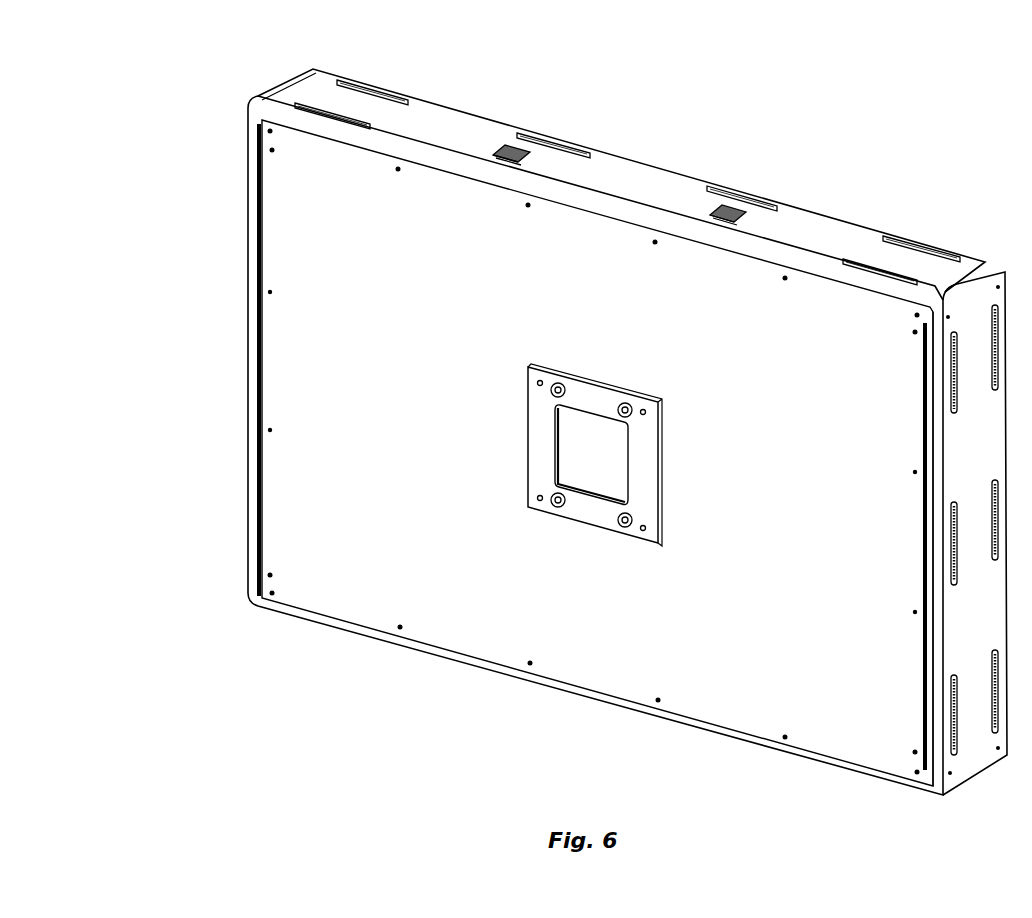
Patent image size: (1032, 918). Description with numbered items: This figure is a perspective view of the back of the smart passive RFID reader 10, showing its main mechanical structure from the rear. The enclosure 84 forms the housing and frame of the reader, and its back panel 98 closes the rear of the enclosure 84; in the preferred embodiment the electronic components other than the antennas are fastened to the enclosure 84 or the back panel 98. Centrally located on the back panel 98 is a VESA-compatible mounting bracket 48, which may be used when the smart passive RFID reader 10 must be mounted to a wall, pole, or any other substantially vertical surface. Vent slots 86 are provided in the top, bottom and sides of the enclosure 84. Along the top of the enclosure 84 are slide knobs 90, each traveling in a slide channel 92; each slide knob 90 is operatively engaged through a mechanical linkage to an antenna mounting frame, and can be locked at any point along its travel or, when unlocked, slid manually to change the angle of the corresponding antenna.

The smart passive RFID reader 10 is at (148, 140).
The VESA-compatible mounting bracket 48 is at (545, 447).
The enclosure 84 is at (632, 178).
The vent slots 86 is at (925, 243).
The slide knob 90 is at (523, 148).
The slide channel 92 is at (508, 150).
The back panel 98 is at (332, 392).